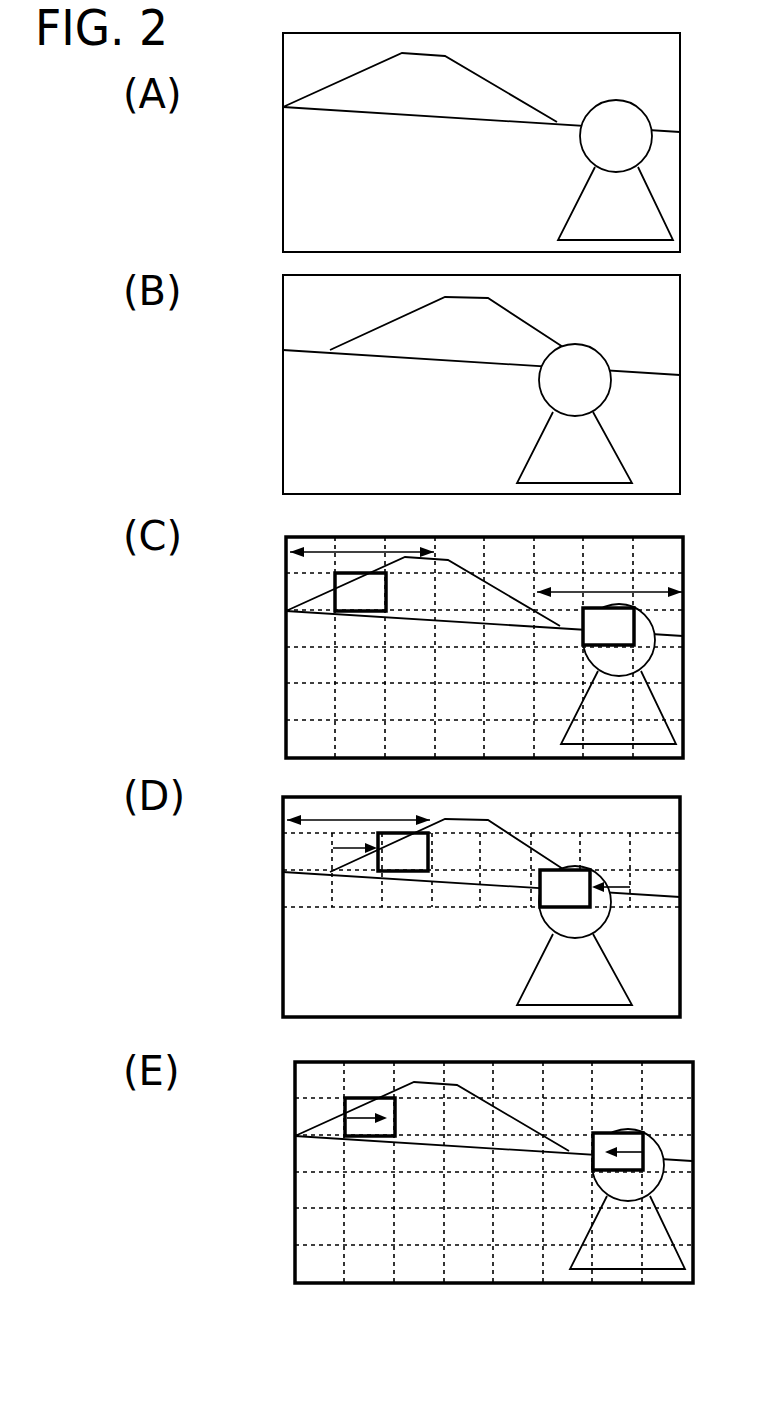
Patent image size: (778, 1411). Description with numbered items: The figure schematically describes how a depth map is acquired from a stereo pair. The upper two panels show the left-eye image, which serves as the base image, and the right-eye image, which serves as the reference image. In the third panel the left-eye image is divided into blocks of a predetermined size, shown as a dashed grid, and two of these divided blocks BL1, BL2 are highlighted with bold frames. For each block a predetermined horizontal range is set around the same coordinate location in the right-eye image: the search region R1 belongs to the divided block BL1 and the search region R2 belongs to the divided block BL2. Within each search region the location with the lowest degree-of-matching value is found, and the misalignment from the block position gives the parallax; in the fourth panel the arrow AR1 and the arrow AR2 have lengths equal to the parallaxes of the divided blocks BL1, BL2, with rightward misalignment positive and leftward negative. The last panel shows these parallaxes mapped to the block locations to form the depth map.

The search region R1 is at (360, 665).
The search region R2 is at (609, 551).
The divided block BL1 is at (396, 820).
The divided block BL2 is at (583, 837).
The parallax arrow AR1 is at (336, 810).
The parallax arrow AR2 is at (629, 847).